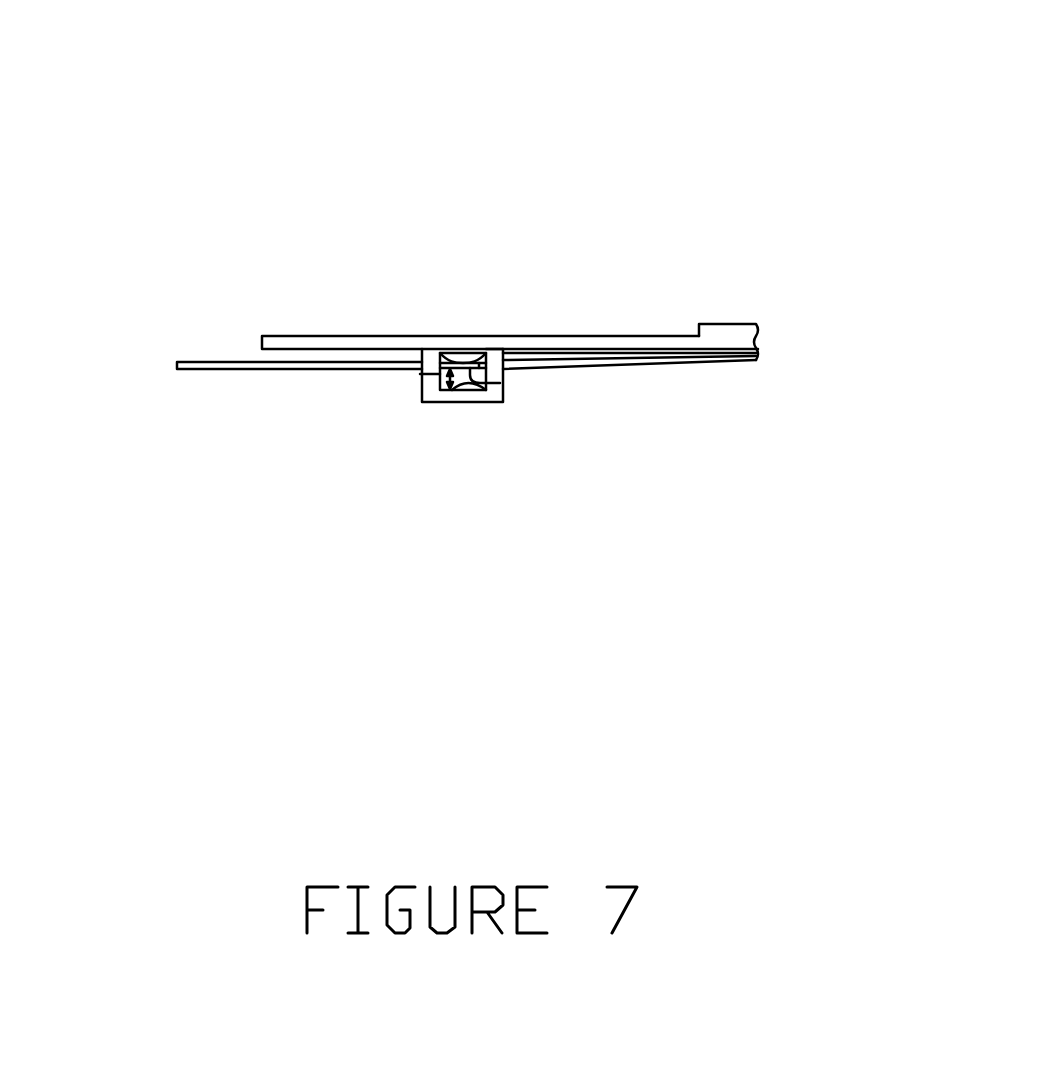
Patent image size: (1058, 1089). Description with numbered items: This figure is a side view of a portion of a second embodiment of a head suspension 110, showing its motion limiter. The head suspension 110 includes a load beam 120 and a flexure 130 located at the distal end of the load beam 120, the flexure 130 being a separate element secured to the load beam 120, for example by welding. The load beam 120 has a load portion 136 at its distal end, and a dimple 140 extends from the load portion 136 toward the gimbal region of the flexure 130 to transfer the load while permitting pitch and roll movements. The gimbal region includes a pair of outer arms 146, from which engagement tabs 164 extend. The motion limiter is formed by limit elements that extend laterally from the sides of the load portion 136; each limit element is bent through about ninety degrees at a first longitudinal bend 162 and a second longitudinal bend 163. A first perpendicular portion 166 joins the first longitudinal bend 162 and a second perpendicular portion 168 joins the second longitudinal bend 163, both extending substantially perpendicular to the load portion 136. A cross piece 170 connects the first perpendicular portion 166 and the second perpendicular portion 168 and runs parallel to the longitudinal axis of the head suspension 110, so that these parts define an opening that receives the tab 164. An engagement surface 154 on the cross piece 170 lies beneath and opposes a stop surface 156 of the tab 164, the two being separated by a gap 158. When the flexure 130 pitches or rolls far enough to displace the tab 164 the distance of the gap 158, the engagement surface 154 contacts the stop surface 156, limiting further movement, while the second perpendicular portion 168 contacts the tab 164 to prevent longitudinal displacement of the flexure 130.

The head suspension 110 is at (300, 228).
The load beam 120 is at (753, 328).
The flexure 130 is at (656, 362).
The load portion 136 is at (266, 339).
The dimple 140 is at (483, 351).
The outer arms 146 is at (232, 366).
The engagement surface 154 is at (448, 390).
The stop surface 156 is at (500, 383).
The gap 158 is at (440, 381).
The first longitudinal bend 162 is at (497, 349).
The second longitudinal bend 163 is at (433, 353).
The engagement tab 164 is at (463, 358).
The first perpendicular portion 166 is at (497, 390).
The second perpendicular portion 168 is at (420, 374).
The cross piece 170 is at (440, 397).